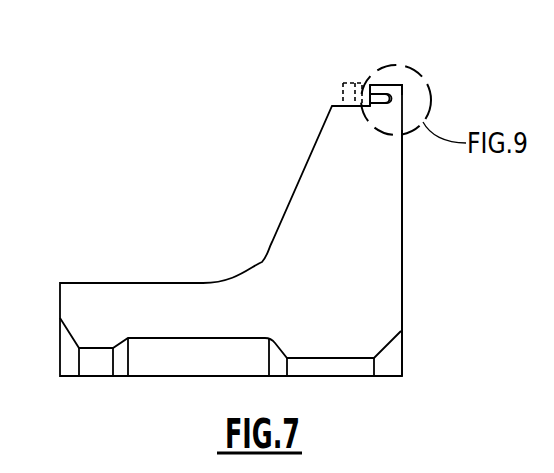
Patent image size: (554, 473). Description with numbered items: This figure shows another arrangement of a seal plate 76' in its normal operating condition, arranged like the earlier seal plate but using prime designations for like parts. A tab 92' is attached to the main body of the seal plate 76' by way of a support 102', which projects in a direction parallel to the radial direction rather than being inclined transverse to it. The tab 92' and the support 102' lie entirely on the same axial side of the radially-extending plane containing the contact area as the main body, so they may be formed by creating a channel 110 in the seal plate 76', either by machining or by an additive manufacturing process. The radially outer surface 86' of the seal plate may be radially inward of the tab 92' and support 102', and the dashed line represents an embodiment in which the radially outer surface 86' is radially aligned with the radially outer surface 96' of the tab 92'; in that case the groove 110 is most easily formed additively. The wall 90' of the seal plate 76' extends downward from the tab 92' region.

The seal plate 76' is at (231, 230).
The wall 90' is at (437, 253).
The tab 92' is at (401, 54).
The channel 110 is at (371, 98).
The radially outer surface of the tabs 96' is at (437, 62).
The support 102' is at (446, 104).
The radially outer surface 86' is at (319, 82).